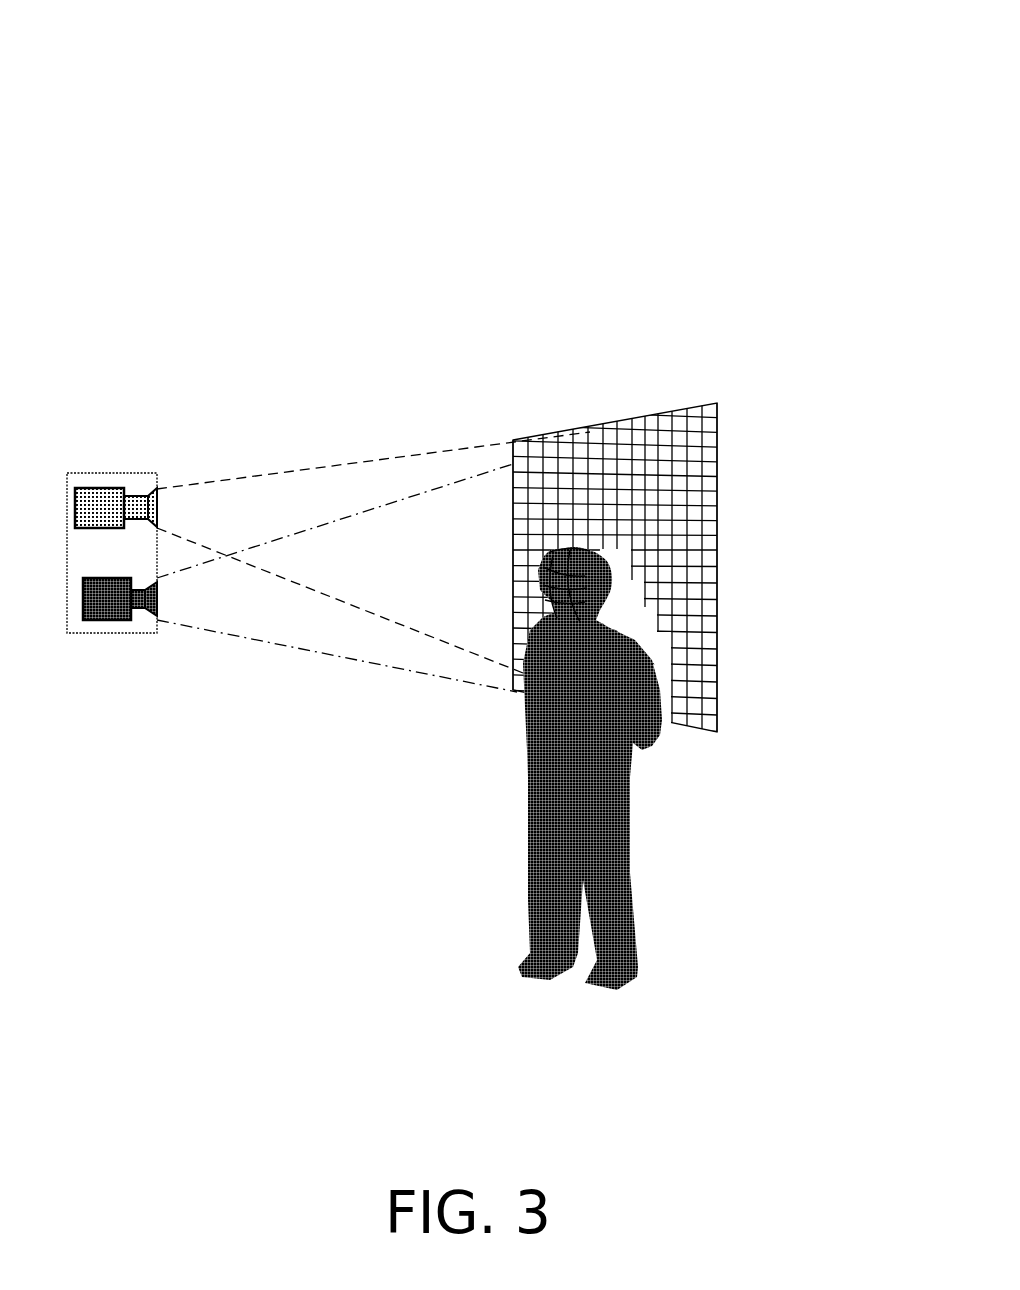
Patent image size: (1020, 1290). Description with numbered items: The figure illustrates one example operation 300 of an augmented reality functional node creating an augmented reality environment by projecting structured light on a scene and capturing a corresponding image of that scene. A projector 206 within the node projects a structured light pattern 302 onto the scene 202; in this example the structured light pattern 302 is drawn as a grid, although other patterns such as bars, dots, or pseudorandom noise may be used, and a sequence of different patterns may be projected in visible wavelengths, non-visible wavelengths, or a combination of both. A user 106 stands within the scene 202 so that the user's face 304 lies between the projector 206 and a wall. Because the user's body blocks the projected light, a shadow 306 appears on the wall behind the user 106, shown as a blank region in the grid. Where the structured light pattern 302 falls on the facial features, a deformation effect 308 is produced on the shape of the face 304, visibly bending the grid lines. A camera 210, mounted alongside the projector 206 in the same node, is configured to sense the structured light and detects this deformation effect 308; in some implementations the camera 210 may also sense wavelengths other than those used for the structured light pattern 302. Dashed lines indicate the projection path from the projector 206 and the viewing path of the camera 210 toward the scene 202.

The operation 300 is at (758, 30).
The projector 206 is at (97, 510).
The camera 210 is at (117, 616).
The structured light pattern 302 is at (511, 460).
The scene 202 is at (732, 732).
The face 304 is at (569, 545).
The shadow 306 is at (618, 558).
The deformation effect 308 is at (559, 625).
The user 106 is at (647, 740).